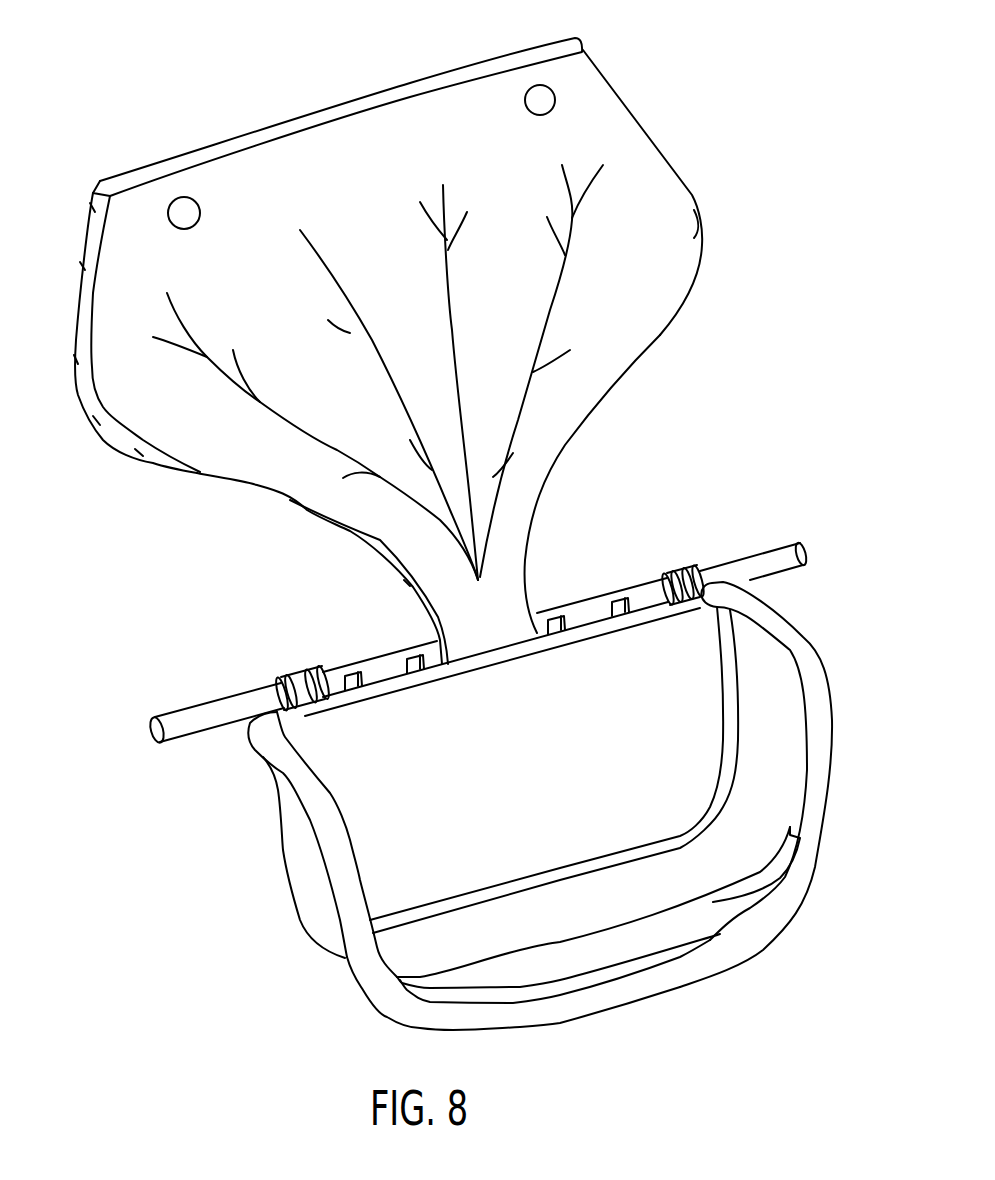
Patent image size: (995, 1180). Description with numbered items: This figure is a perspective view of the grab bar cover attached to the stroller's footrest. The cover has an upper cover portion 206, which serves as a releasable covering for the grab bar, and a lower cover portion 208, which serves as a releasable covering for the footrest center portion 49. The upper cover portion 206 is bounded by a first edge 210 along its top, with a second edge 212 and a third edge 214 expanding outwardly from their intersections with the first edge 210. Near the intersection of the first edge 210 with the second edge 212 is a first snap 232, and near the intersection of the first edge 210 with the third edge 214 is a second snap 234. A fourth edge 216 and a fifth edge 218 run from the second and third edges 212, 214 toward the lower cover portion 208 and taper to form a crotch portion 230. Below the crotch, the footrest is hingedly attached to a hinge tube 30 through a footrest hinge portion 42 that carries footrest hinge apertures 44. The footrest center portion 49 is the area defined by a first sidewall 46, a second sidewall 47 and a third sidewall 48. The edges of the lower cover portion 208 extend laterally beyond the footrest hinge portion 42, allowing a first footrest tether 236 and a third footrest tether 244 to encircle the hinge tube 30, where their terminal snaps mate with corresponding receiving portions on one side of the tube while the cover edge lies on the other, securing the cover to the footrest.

The hinge tube 30 is at (222, 720).
The footrest hinge portion 42 is at (385, 666).
The footrest hinge apertures 44 is at (620, 603).
The first sidewall 46 is at (328, 865).
The second sidewall 47 is at (613, 1000).
The third sidewall 48 is at (822, 678).
The footrest center portion 49 is at (607, 860).
The upper cover portion 206 is at (405, 245).
The lower cover portion 208 is at (498, 748).
The first edge 210 is at (331, 108).
The second edge 212 is at (657, 133).
The third edge 214 is at (76, 366).
The fourth edge 216 is at (562, 463).
The fifth edge 218 is at (387, 558).
The crotch portion 230 is at (469, 628).
The first snap 232 is at (556, 101).
The second snap 234 is at (183, 210).
The first footrest tether 236 is at (680, 572).
The third footrest tether 244 is at (290, 678).